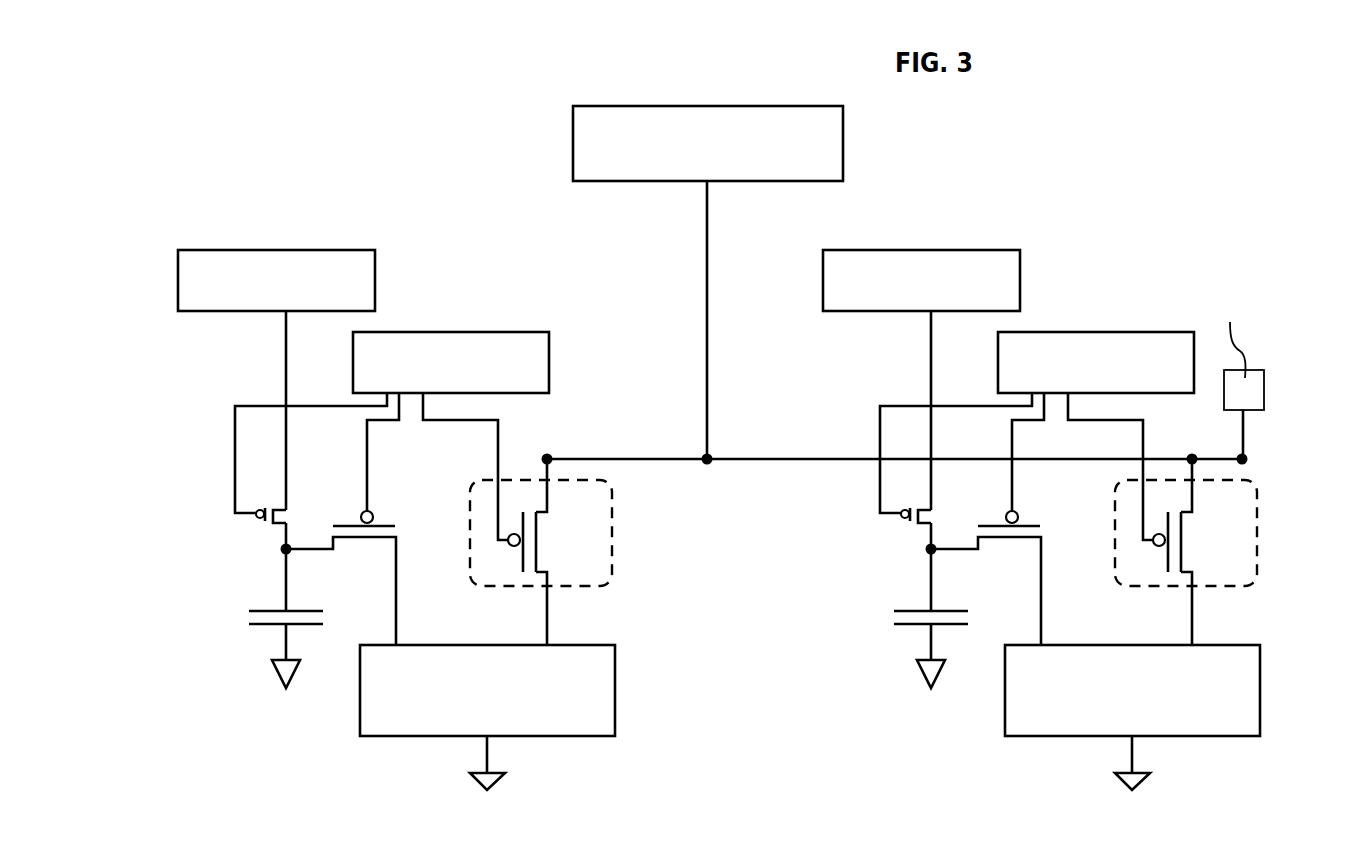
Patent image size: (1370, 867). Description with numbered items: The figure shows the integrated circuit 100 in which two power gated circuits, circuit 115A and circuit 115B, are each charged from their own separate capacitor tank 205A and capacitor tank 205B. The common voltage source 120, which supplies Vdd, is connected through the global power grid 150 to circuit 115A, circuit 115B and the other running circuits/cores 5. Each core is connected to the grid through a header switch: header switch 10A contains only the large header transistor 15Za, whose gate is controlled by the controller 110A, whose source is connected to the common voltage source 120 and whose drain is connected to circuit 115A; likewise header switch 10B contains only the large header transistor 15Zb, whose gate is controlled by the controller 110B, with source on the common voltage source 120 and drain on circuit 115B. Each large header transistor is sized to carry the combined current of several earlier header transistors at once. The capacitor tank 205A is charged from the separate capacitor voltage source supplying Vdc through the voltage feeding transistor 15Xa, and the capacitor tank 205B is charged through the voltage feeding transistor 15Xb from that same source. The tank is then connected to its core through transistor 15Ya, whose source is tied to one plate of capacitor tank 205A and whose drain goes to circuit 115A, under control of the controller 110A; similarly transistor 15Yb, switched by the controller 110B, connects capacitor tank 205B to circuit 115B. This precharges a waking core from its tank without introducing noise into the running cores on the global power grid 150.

The integrated circuit 100 is at (1004, 118).
The common voltage source 120 is at (708, 282).
The controller 110A is at (392, 436).
The controller 110B is at (1037, 436).
The global power grid 150 is at (707, 428).
The voltage feeding transistor 15Xa is at (250, 559).
The transistor 15Ya is at (361, 571).
The large header transistor 15Za is at (554, 552).
The voltage feeding transistor 15Xb is at (895, 559).
The transistor 15Yb is at (1006, 571).
The large header transistor 15Zb is at (1199, 552).
The header switch 10A is at (613, 554).
The header switch 10B is at (1258, 554).
The capacitor tank 205A is at (252, 667).
The capacitor tank 205B is at (894, 667).
The circuit 115A is at (487, 724).
The circuit 115B is at (1132, 724).
The other running circuits/cores 5 is at (1258, 358).